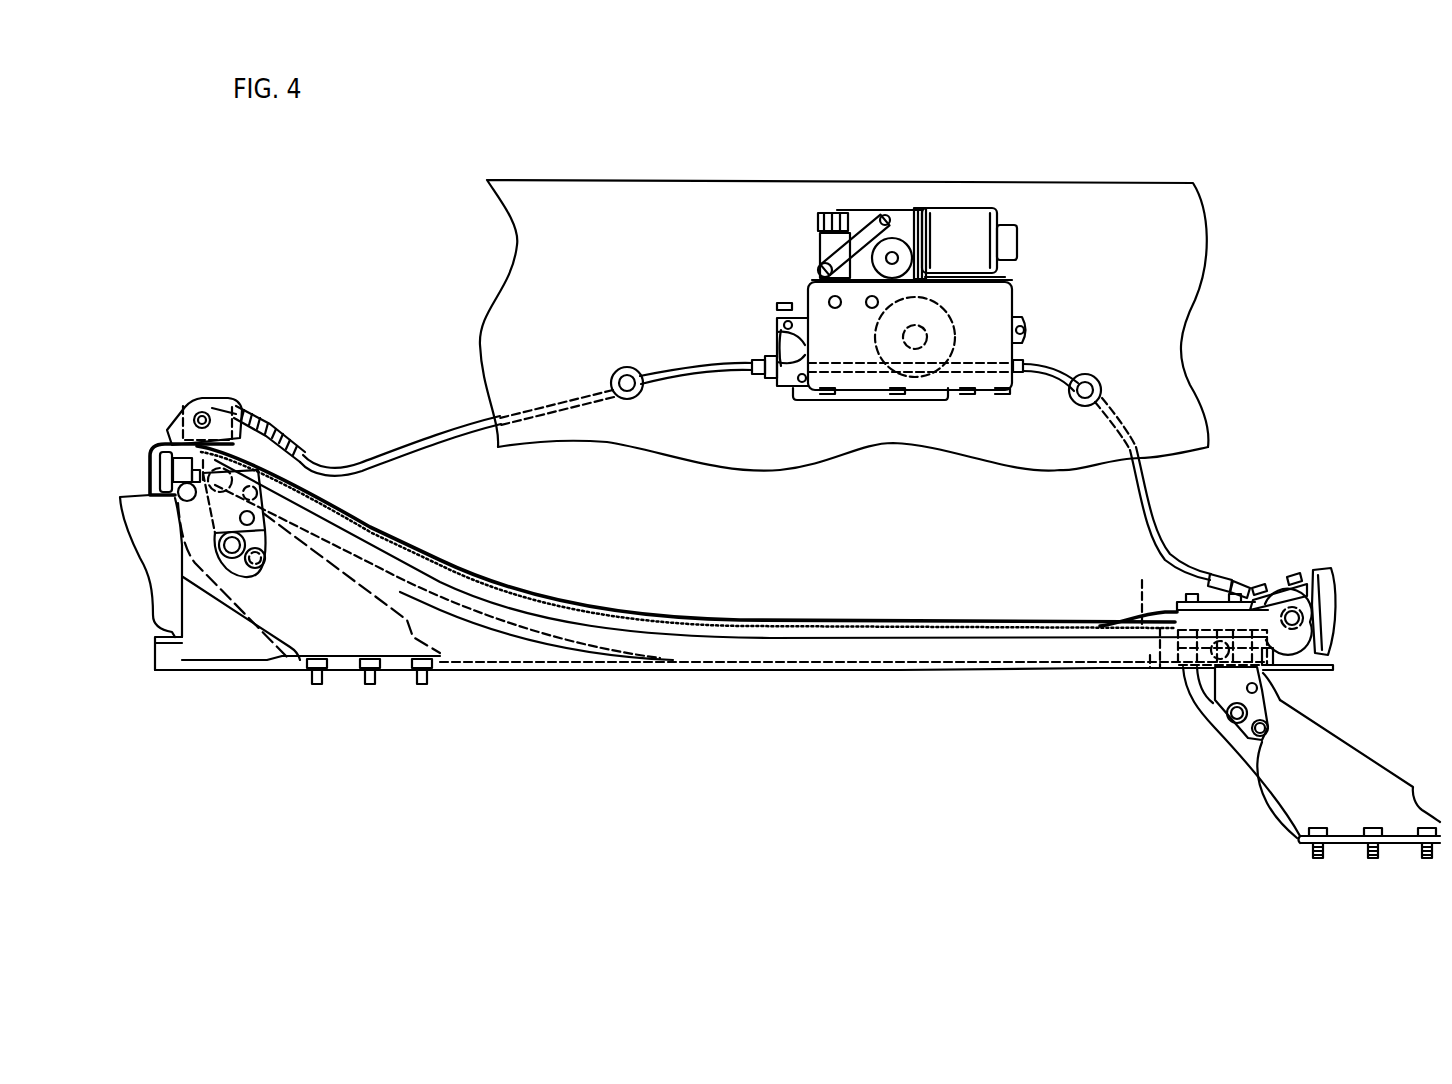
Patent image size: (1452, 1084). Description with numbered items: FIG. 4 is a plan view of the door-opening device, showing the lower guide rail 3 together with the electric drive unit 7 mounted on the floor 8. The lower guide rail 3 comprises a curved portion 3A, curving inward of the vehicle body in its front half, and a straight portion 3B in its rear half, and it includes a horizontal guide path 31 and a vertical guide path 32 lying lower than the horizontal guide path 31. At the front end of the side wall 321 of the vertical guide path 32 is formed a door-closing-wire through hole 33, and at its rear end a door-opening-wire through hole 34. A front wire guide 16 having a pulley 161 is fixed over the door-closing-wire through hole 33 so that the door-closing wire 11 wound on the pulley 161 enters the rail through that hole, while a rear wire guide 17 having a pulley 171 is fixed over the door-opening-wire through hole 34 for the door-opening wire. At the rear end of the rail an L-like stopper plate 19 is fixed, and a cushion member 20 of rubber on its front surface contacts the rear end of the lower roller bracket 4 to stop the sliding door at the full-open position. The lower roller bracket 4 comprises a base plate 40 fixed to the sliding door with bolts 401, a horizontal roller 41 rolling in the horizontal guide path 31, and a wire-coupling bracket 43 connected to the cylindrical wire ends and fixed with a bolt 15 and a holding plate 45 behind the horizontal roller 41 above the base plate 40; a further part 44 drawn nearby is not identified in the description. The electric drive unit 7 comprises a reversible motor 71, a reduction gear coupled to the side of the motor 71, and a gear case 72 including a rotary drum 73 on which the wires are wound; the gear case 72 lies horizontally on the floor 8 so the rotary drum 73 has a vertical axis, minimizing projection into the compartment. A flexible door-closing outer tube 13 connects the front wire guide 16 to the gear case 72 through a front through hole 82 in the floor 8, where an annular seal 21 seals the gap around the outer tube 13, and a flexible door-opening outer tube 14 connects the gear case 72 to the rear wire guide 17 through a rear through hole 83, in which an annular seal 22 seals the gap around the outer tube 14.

The lower guide rail 3 is at (668, 672).
The curved portion 3A is at (483, 630).
The straight portion 3B is at (897, 663).
The lower roller bracket 4 is at (1287, 820).
The electric drive unit 7 is at (1024, 240).
The floor 8 is at (1130, 180).
The door-closing wire 11 is at (1142, 580).
The door-closing outer tube 13 is at (721, 362).
The door-opening outer tube 14 is at (1190, 565).
The bolt 15 is at (1262, 738).
The front wire guide 16 is at (248, 401).
The rear wire guide 17 is at (1273, 583).
The stopper plate 19 is at (1283, 652).
The cushion member 20 is at (1267, 682).
The annular seal 21 is at (612, 376).
The annular seal 22 is at (1105, 393).
The horizontal guide path 31 is at (713, 656).
The vertical guide path 32 is at (606, 615).
The door-closing-wire through hole 33 is at (192, 421).
The door-opening-wire through hole 34 is at (1313, 617).
The base plate 40 is at (1250, 783).
The horizontal roller 41 is at (1212, 673).
The wire-coupling bracket 43 is at (1262, 800).
The hidden member 44 is at (1150, 655).
The holding plate 45 is at (1235, 702).
The reversible motor 71 is at (900, 208).
The gear case 72 is at (1012, 306).
The rotary drum 73 is at (915, 366).
The front through hole 82 is at (626, 375).
The rear through hole 83 is at (1088, 383).
The pulley 161 is at (197, 398).
The pulley 171 is at (1300, 630).
The side wall 321 is at (1090, 620).
The bolts 401 is at (1318, 858).